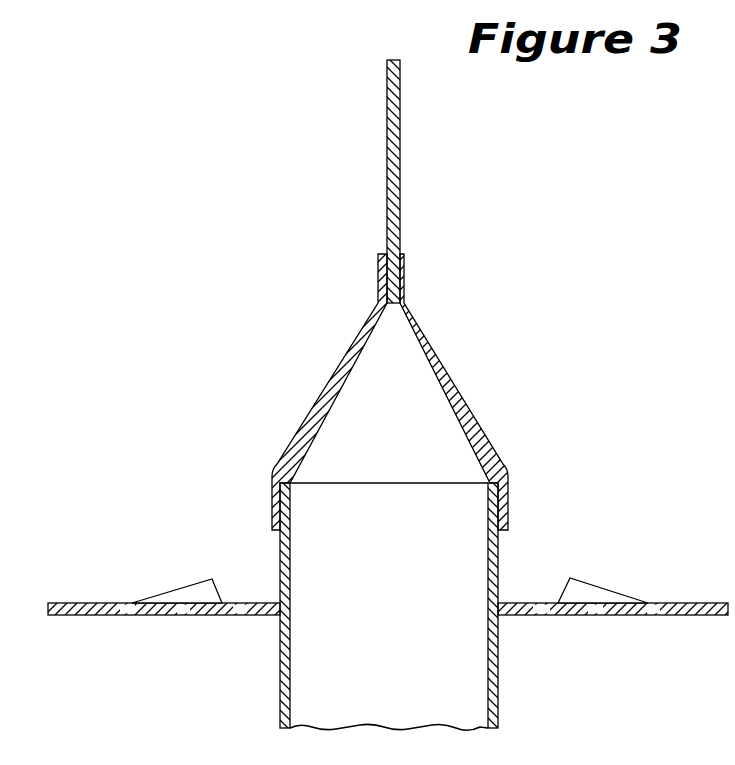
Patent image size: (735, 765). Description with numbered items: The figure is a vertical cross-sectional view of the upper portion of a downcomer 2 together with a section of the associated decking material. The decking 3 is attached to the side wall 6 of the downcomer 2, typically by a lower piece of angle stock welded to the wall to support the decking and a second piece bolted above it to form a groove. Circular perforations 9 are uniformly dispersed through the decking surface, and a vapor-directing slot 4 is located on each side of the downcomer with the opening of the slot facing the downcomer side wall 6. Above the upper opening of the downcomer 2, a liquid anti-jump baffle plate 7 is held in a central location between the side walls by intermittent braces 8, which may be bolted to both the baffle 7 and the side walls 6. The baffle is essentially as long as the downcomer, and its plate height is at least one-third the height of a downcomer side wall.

The downcomer 2 is at (422, 605).
The decking 3 is at (380, 584).
The vapor-directing slot 4 is at (394, 570).
The side wall 6 is at (346, 687).
The anti-jump baffle plate 7 is at (418, 181).
The braces 8 is at (390, 392).
The circular perforations 9 is at (365, 634).